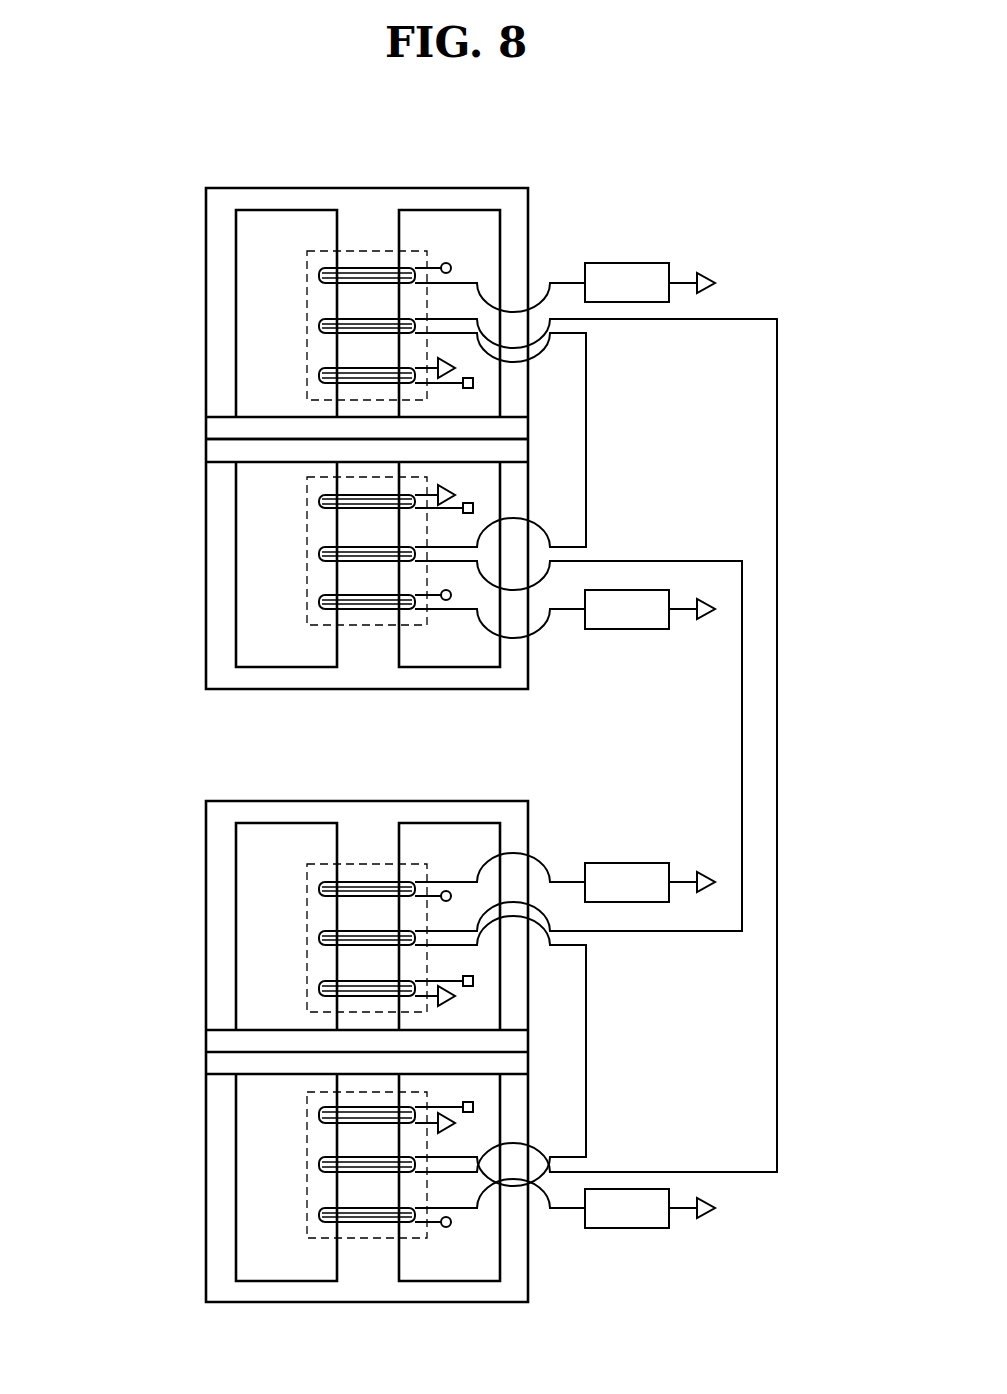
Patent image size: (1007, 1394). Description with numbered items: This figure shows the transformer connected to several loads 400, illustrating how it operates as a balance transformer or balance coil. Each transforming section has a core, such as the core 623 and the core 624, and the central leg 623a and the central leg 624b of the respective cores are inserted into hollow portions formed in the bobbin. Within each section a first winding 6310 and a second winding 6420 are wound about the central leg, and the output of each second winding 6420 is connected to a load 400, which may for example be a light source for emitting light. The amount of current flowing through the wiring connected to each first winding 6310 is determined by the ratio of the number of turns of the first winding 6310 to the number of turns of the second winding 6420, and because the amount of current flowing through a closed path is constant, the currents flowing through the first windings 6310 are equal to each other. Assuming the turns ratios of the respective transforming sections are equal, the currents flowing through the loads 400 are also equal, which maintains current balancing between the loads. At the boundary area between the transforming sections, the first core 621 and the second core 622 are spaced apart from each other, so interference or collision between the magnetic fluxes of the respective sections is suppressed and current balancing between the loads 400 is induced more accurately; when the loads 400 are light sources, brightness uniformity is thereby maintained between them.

The load 400 is at (625, 268).
The first core 621 is at (225, 426).
The second core 622 is at (225, 453).
The core 623 is at (283, 198).
The central leg 623a is at (372, 226).
The core 624 is at (286, 678).
The central leg 624b is at (368, 650).
The first winding 6310 is at (323, 319).
The second winding 6420 is at (323, 268).